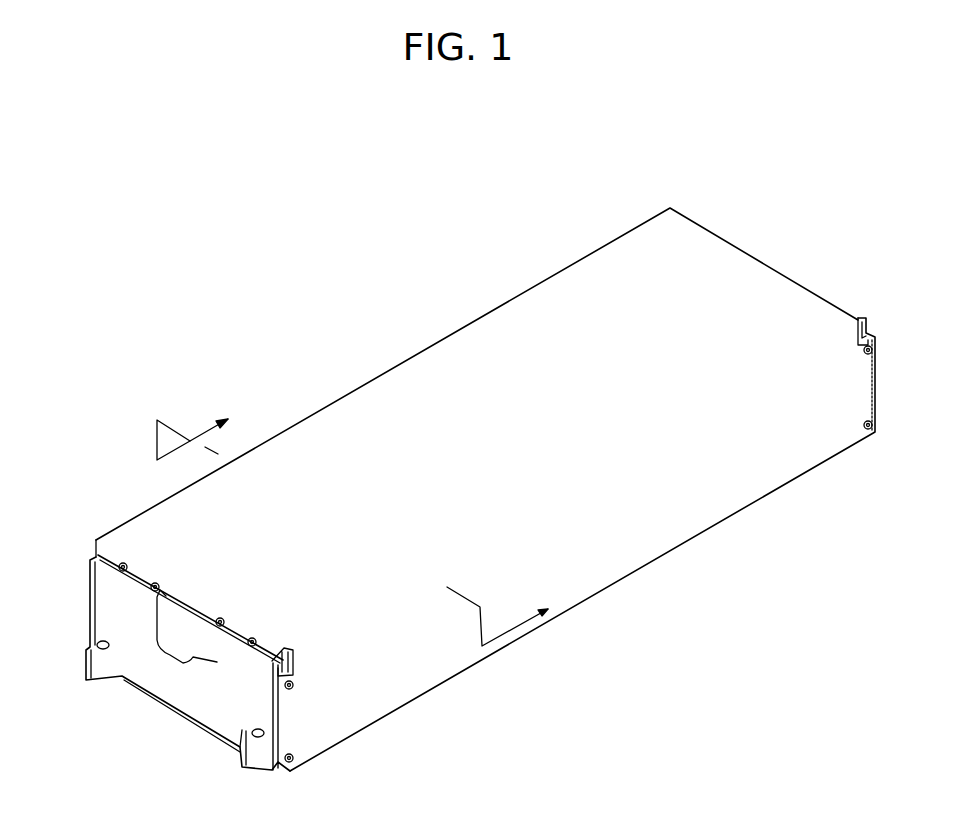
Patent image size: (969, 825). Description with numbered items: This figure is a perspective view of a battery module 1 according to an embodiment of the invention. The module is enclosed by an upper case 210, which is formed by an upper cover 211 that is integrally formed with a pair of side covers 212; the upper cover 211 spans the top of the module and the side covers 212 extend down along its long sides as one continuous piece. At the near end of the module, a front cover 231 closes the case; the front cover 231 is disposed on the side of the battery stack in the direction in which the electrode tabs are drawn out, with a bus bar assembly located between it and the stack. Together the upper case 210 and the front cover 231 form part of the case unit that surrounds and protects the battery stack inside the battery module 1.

The battery module 1 is at (95, 162).
The upper case 210 is at (465, 266).
The upper cover 211 is at (421, 370).
The side covers 212 is at (617, 493).
The front cover 231 is at (190, 700).